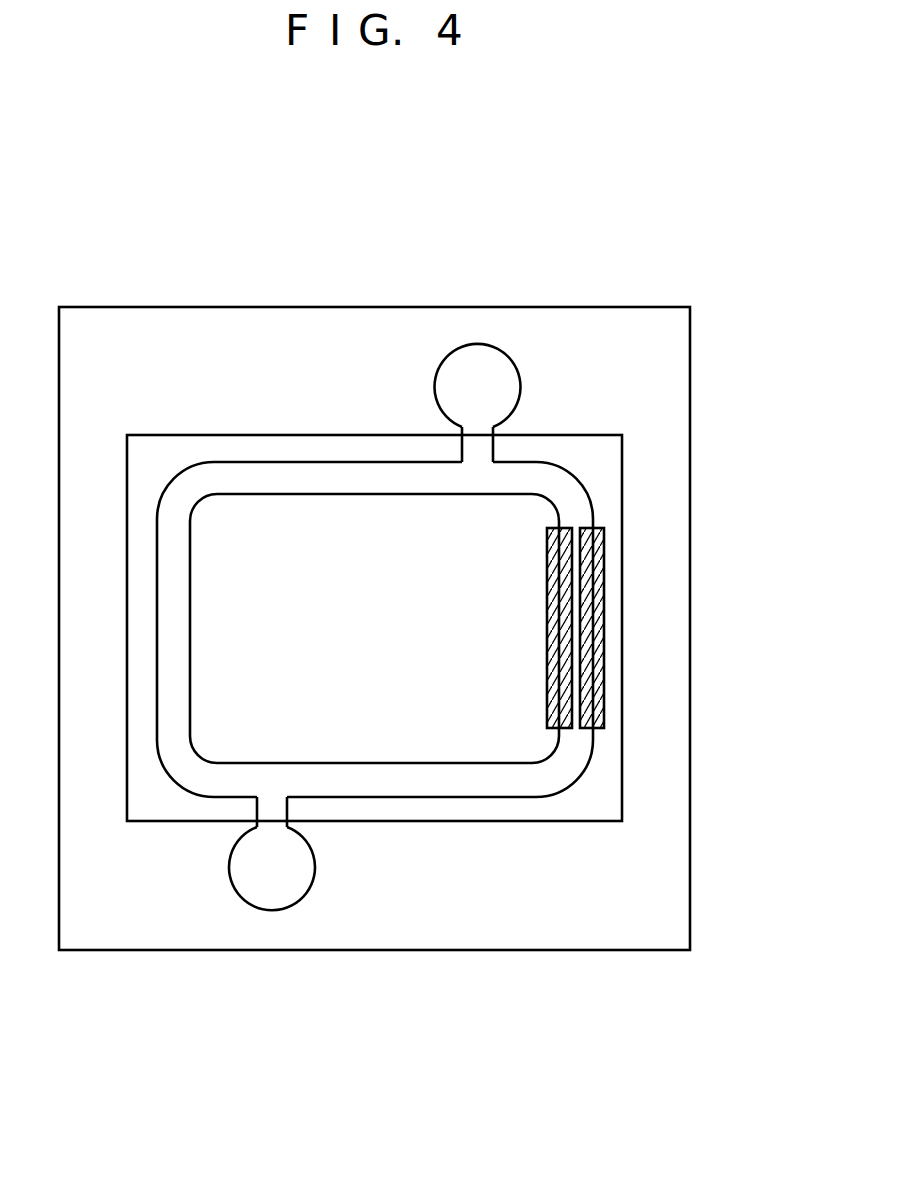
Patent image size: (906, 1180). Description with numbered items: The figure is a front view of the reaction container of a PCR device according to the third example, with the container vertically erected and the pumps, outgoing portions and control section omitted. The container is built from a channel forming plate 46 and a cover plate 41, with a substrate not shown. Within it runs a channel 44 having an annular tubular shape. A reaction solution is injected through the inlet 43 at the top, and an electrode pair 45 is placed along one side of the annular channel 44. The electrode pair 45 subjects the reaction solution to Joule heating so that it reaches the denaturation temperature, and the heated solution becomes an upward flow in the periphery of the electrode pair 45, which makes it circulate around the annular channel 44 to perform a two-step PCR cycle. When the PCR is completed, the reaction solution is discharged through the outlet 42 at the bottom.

The cover plate 41 is at (622, 515).
The outlet 42 is at (267, 911).
The inlet 43 is at (478, 345).
The channel 44 is at (580, 483).
The electrode pair 45 is at (604, 637).
The channel forming plate 46 is at (690, 863).